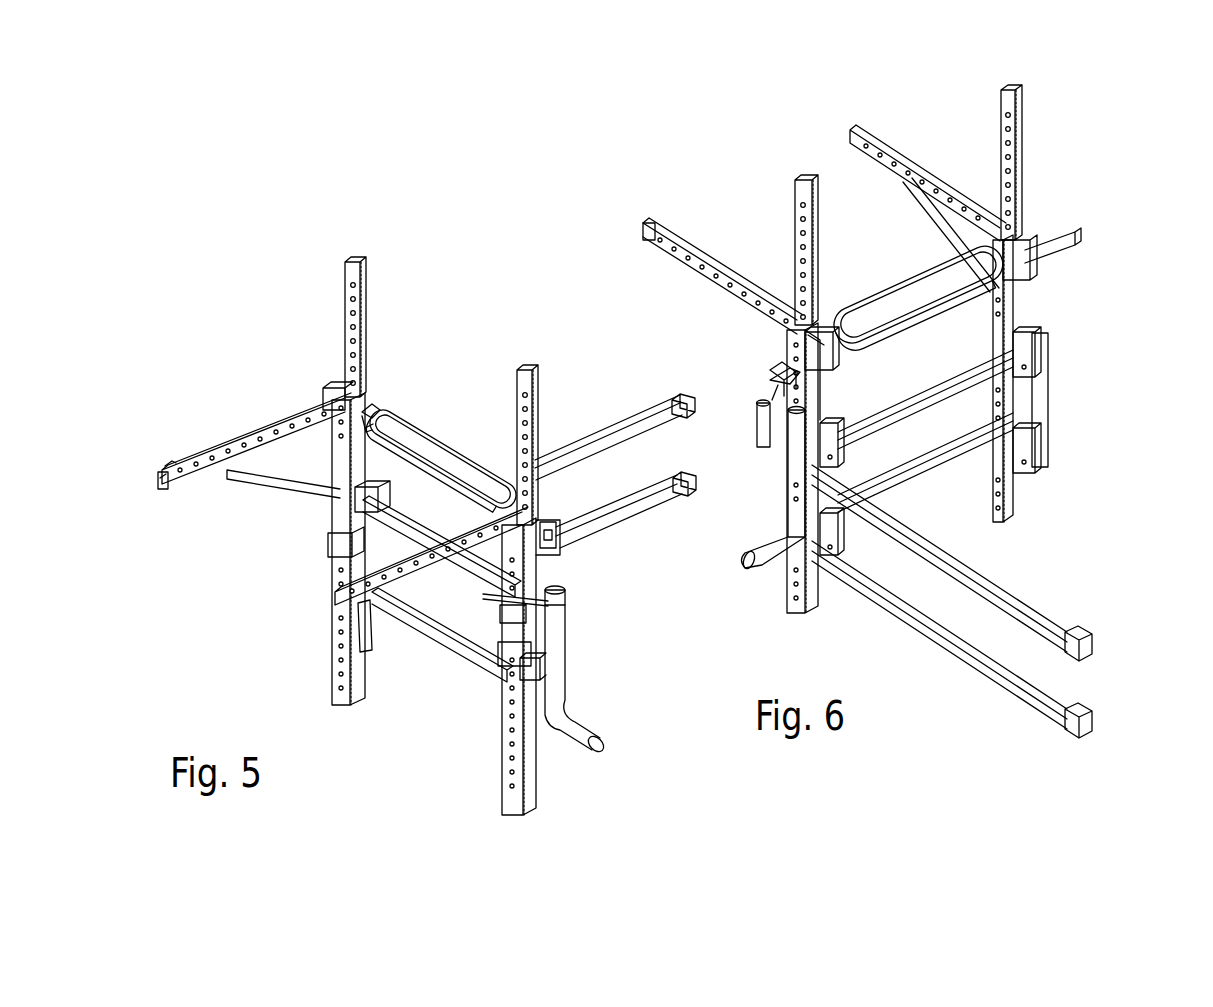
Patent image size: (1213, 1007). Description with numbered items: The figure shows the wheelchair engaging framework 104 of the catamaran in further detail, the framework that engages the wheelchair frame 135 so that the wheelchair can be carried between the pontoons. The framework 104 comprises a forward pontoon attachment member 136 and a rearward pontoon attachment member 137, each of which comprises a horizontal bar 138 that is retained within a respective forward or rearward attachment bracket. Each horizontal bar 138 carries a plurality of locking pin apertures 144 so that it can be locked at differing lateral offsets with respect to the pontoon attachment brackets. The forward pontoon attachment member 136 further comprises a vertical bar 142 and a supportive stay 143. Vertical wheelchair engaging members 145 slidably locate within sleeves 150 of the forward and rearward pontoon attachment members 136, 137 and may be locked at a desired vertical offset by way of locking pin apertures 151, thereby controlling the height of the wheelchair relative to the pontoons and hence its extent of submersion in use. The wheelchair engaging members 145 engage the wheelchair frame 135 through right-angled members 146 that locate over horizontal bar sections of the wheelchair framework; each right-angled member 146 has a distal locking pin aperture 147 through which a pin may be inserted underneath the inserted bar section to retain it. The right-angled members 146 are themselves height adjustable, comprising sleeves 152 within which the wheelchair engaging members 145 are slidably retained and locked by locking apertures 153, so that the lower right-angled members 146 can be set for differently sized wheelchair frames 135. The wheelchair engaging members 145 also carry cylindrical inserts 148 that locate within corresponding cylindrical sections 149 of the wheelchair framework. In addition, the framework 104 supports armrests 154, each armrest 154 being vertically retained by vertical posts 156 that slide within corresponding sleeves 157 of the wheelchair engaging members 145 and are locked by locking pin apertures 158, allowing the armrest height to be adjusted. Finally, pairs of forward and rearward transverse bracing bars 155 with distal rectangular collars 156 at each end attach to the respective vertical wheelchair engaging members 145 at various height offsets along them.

In FIG. 5, the wheelchair engaging framework 104 is at (559, 145).
In FIG. 5, the wheelchair frame 135 is at (457, 660).
In FIG. 6, the wheelchair frame 135 is at (908, 495).
In FIG. 5, the forward pontoon attachment member 136 is at (160, 490).
In FIG. 6, the forward pontoon attachment member 136 is at (873, 135).
In FIG. 5, the rearward pontoon attachment member 137 is at (337, 597).
In FIG. 6, the rearward pontoon attachment member 137 is at (683, 260).
In FIG. 5, the horizontal bar 138 is at (202, 467).
In FIG. 6, the horizontal bar 138 is at (673, 237).
In FIG. 5, the vertical bar 142 is at (340, 457).
In FIG. 5, the supportive stay 143 is at (263, 483).
In FIG. 5, the locking pin aperture 144 is at (187, 468).
In FIG. 5, the wheelchair engaging member 145 is at (354, 262).
In FIG. 6, the wheelchair engaging member 145 is at (798, 188).
In FIG. 5, the right-angled member 146 is at (417, 593).
In FIG. 6, the right-angled member 146 is at (830, 447).
In FIG. 6, the distal locking pin aperture 147 is at (833, 552).
In FIG. 5, the cylindrical insert 148 is at (557, 612).
In FIG. 5, the cylindrical section 149 is at (547, 628).
In FIG. 6, the cylindrical section 149 is at (773, 466).
In FIG. 5, the sleeve 150 is at (362, 415).
In FIG. 5, the locking pin aperture 151 is at (360, 365).
In FIG. 5, the sleeve 152 is at (507, 660).
In FIG. 5, the locking aperture 153 is at (507, 732).
In FIG. 5, the armrest 154 is at (447, 427).
In FIG. 6, the armrest 154 is at (887, 303).
In FIG. 5, the transverse bracing bar 155 is at (653, 418).
In FIG. 6, the transverse bracing bar 155 is at (837, 340).
In FIG. 6, the vertical post 156 is at (815, 402).
In FIG. 6, the sleeve 157 is at (802, 368).
In FIG. 6, the locking pin aperture 158 is at (1028, 253).